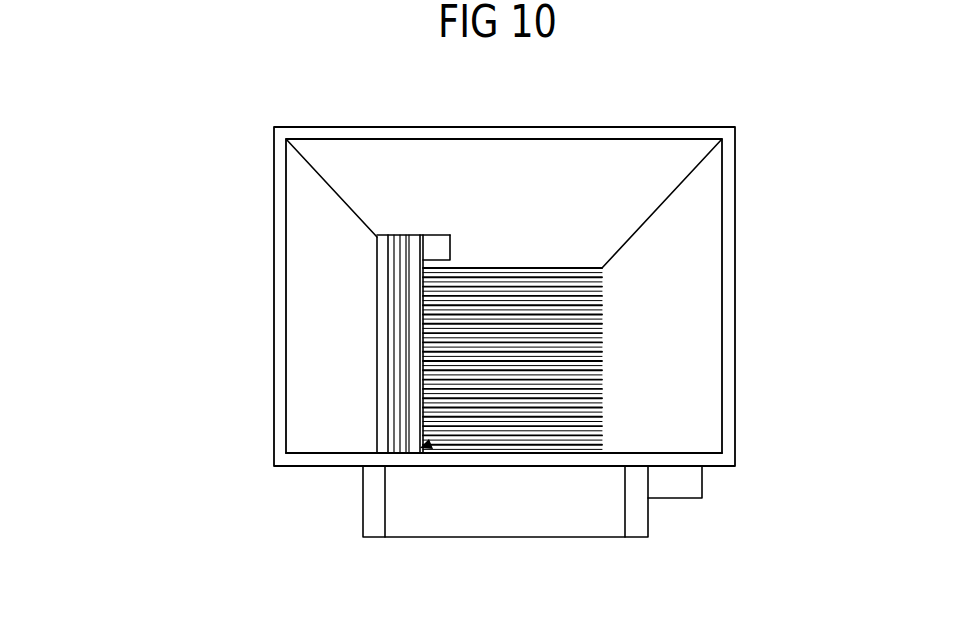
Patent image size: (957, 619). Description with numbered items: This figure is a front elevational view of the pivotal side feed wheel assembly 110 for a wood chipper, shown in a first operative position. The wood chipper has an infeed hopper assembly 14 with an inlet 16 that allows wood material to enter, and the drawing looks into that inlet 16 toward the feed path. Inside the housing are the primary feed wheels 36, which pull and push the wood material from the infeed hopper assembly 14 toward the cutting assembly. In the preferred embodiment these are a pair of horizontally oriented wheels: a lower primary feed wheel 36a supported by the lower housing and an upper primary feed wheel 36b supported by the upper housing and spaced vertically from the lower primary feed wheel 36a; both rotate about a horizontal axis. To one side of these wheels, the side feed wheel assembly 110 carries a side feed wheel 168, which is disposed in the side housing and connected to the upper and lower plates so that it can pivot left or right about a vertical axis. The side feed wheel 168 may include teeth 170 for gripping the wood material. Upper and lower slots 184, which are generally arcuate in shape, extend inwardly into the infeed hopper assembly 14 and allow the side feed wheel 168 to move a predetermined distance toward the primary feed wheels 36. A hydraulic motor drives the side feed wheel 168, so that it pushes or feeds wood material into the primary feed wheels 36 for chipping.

The side feed wheel assembly 110 is at (240, 280).
The infeed hopper assembly 14 is at (735, 294).
The inlet 16 is at (722, 244).
The primary feed wheels 36 is at (611, 341).
The lower primary feed wheel 36a is at (541, 432).
The upper primary feed wheel 36b is at (548, 298).
The side feed wheel 168 is at (398, 285).
The teeth 170 is at (405, 400).
The upper and lower slots 184 is at (452, 245).